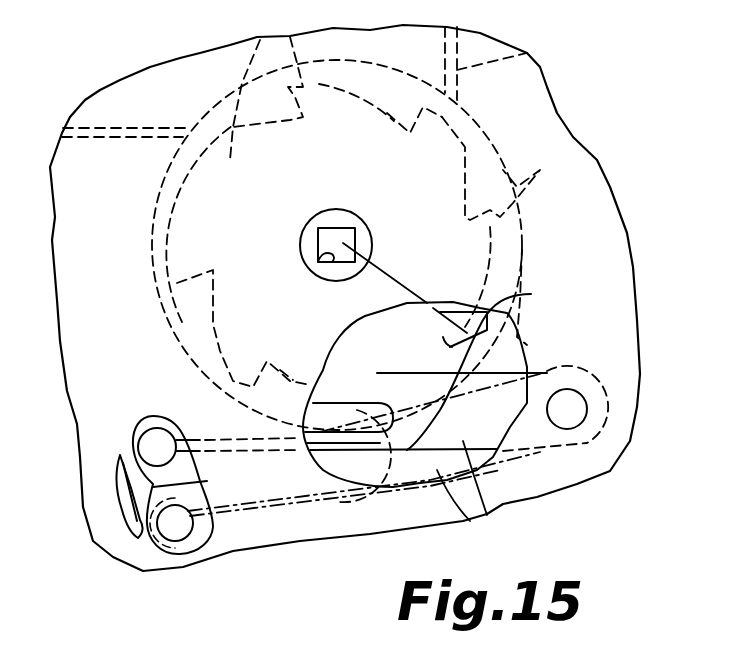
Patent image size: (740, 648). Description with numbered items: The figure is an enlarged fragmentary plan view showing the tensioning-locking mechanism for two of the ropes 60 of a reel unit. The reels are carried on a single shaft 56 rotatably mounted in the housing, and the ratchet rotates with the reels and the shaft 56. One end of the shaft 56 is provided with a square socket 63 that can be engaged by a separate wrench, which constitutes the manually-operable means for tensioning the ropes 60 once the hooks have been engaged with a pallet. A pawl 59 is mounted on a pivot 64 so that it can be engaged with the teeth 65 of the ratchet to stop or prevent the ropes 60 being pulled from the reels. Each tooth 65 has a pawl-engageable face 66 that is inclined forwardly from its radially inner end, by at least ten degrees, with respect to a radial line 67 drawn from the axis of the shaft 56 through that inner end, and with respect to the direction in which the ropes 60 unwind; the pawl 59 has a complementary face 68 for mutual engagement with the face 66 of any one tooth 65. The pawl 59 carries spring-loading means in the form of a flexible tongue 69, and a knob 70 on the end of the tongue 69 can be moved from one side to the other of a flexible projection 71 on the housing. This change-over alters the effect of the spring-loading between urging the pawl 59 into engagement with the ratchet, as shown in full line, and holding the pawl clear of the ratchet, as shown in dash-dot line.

The shaft 56 is at (311, 221).
The pawl 59 is at (470, 521).
The rope 60 is at (112, 128).
The square socket 63 is at (320, 258).
The pivot 64 is at (577, 410).
The teeth 65 is at (293, 37).
The pawl-engageable face 66 is at (512, 294).
The radial line 67 is at (400, 285).
The complementary face 68 is at (378, 386).
The flexible tongue 69 is at (282, 502).
The knob 70 is at (150, 441).
The flexible projection 71 is at (198, 484).